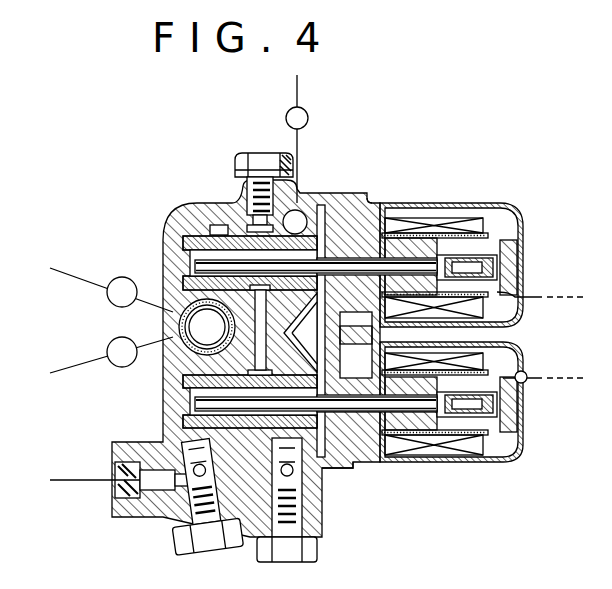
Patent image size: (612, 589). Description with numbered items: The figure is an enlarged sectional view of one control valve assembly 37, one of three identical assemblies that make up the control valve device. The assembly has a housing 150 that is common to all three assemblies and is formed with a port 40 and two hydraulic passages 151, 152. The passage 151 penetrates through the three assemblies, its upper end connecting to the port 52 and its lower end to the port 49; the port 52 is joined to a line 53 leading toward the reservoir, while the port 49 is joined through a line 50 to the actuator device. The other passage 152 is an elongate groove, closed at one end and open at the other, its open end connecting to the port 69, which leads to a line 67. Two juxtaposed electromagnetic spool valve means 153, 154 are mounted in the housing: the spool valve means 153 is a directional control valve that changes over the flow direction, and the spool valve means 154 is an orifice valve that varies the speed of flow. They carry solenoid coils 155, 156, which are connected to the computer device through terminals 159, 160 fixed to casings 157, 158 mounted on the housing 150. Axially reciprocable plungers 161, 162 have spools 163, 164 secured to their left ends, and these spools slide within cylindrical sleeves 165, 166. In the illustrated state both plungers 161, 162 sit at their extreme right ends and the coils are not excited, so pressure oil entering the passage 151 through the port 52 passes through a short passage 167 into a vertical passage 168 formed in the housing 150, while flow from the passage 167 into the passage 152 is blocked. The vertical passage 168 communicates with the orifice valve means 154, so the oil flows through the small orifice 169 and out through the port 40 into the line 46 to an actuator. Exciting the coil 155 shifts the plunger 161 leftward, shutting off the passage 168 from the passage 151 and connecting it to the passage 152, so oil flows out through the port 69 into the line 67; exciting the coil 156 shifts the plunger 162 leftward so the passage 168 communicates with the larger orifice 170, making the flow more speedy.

The control valve assembly 37 is at (387, 192).
The port 40 is at (117, 492).
The line 46 is at (70, 479).
The port 49 is at (114, 283).
The line 50 is at (56, 275).
The port 52 is at (111, 343).
The line 53 is at (57, 384).
The line 67 is at (299, 86).
The port 69 is at (306, 114).
The housing 150 is at (192, 206).
The hydraulic passage 151 is at (202, 322).
The hydraulic passage 152 is at (303, 208).
The electromagnetic spool valve means 153 is at (216, 224).
The electromagnetic spool valve means 154 is at (321, 473).
The solenoid coil 155 is at (470, 227).
The solenoid coil 156 is at (465, 457).
The casing 157 is at (445, 204).
The casing 158 is at (498, 464).
The terminal 159 is at (519, 290).
The terminal 160 is at (524, 383).
The plunger 161 is at (520, 243).
The plunger 162 is at (490, 420).
The spool 163 is at (200, 250).
The spool 164 is at (195, 388).
The cylindrical sleeve 165 is at (197, 240).
The cylindrical sleeve 166 is at (200, 423).
The short passage 167 is at (210, 293).
The vertical passage 168 is at (200, 360).
The orifice 169 is at (170, 518).
The orifice 170 is at (297, 483).